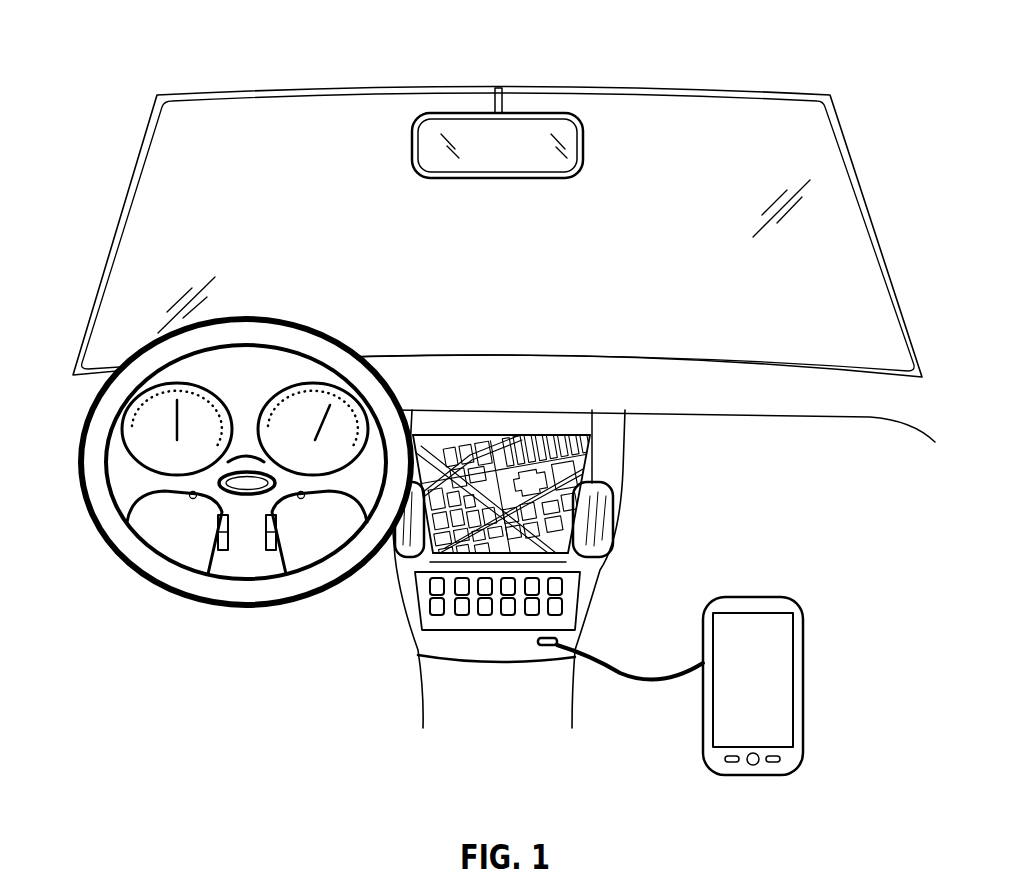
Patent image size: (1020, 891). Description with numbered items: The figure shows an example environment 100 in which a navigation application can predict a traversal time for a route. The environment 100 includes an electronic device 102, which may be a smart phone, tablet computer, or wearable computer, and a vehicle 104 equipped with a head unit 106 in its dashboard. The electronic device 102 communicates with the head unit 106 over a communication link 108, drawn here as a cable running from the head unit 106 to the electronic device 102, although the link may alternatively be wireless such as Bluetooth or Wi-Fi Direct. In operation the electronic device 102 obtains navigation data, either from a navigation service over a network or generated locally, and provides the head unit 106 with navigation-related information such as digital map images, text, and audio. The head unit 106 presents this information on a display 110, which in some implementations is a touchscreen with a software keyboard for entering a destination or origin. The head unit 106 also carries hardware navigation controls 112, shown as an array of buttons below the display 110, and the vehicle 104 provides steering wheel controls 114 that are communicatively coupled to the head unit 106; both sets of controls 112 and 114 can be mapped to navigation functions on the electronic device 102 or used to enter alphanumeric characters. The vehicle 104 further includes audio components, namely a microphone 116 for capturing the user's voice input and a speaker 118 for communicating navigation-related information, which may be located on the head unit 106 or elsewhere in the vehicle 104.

The environment 100 is at (250, 40).
The electronic device 102 is at (760, 595).
The vehicle 104 is at (66, 343).
The head unit 106 is at (542, 398).
The communication link 108 is at (623, 657).
The display 110 is at (573, 457).
The navigation controls 112 is at (424, 600).
The steering wheel controls 114 is at (207, 540).
The microphone 116 is at (397, 540).
The speaker 118 is at (598, 518).